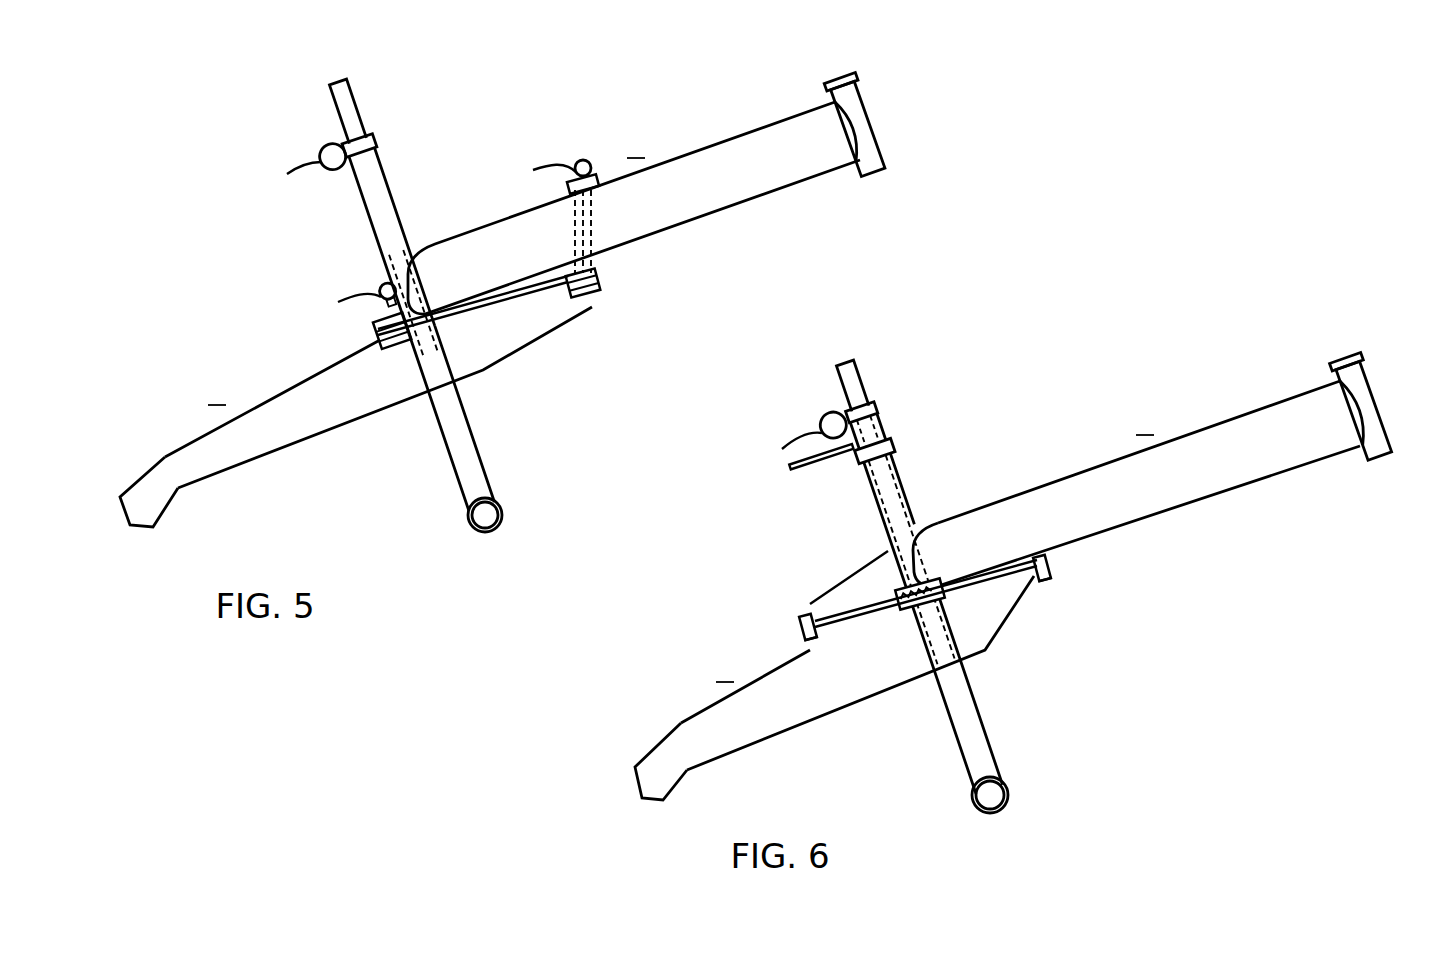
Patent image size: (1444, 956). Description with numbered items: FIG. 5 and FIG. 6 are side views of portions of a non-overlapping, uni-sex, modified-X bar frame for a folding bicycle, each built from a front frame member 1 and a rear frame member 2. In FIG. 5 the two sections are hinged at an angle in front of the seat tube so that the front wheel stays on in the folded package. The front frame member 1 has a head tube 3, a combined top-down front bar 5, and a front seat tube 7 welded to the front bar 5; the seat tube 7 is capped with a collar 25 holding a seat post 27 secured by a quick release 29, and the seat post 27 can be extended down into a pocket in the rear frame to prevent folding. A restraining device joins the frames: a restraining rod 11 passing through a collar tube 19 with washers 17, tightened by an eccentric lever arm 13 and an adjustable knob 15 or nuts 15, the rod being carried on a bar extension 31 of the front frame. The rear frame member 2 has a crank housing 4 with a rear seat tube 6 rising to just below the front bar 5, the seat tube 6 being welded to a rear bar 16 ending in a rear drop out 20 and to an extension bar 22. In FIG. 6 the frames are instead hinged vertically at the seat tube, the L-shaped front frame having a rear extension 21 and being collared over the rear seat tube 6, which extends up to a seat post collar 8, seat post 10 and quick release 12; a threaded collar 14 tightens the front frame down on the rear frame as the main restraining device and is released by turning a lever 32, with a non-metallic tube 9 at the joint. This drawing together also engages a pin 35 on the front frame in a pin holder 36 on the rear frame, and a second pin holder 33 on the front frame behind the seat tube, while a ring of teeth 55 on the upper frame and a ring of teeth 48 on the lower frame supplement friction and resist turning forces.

In FIG. 5, the front frame member 1 is at (665, 194).
In FIG. 6, the front frame member 1 is at (1168, 469).
In FIG. 5, the rear frame member 2 is at (339, 441).
In FIG. 6, the rear frame member 2 is at (826, 708).
In FIG. 5, the head tube 3 is at (868, 120).
In FIG. 6, the head tube 3 is at (1364, 401).
In FIG. 5, the crank housing 4 is at (467, 515).
In FIG. 6, the crank housing 4 is at (970, 792).
In FIG. 5, the front bar 5 is at (675, 195).
In FIG. 6, the front bar 5 is at (1115, 497).
In FIG. 5, the seat tube 6 is at (470, 444).
In FIG. 6, the seat tube 6 is at (878, 427).
In FIG. 5, the seat tube 7 is at (382, 178).
In FIG. 6, the seat tube 7 is at (868, 520).
In FIG. 6, the seat post collar 8 is at (874, 404).
In FIG. 6, the non-metallic tube 9 is at (902, 598).
In FIG. 6, the seat post 10 is at (850, 380).
In FIG. 5, the restraining rod 11 is at (598, 216).
In FIG. 6, the quick release 12 is at (826, 407).
In FIG. 5, the eccentric lever arm 13 is at (378, 275).
In FIG. 6, the threaded collar 14 is at (892, 438).
In FIG. 5, the adjustable knob 15 is at (451, 357).
In FIG. 5, the rear bar 16 is at (312, 407).
In FIG. 6, the rear bar 16 is at (816, 690).
In FIG. 5, the washers 17 is at (510, 289).
In FIG. 5, the collar tube 19 is at (603, 244).
In FIG. 5, the rear drop out 20 is at (141, 522).
In FIG. 6, the rear drop out 20 is at (652, 788).
In FIG. 6, the rear extension 21 is at (848, 610).
In FIG. 5, the extension bar 22 is at (473, 305).
In FIG. 6, the extension bar 22 is at (926, 593).
In FIG. 5, the collar 25 is at (375, 140).
In FIG. 5, the seat post 27 is at (345, 87).
In FIG. 5, the quick release 29 is at (304, 152).
In FIG. 5, the bar extension 31 is at (372, 327).
In FIG. 6, the lever 32 is at (788, 467).
In FIG. 6, the pin holder 33 is at (798, 630).
In FIG. 6, the pin 35 is at (1055, 571).
In FIG. 6, the pin holder 36 is at (1038, 578).
In FIG. 6, the ring of teeth 48 is at (930, 610).
In FIG. 6, the ring of teeth 55 is at (937, 565).